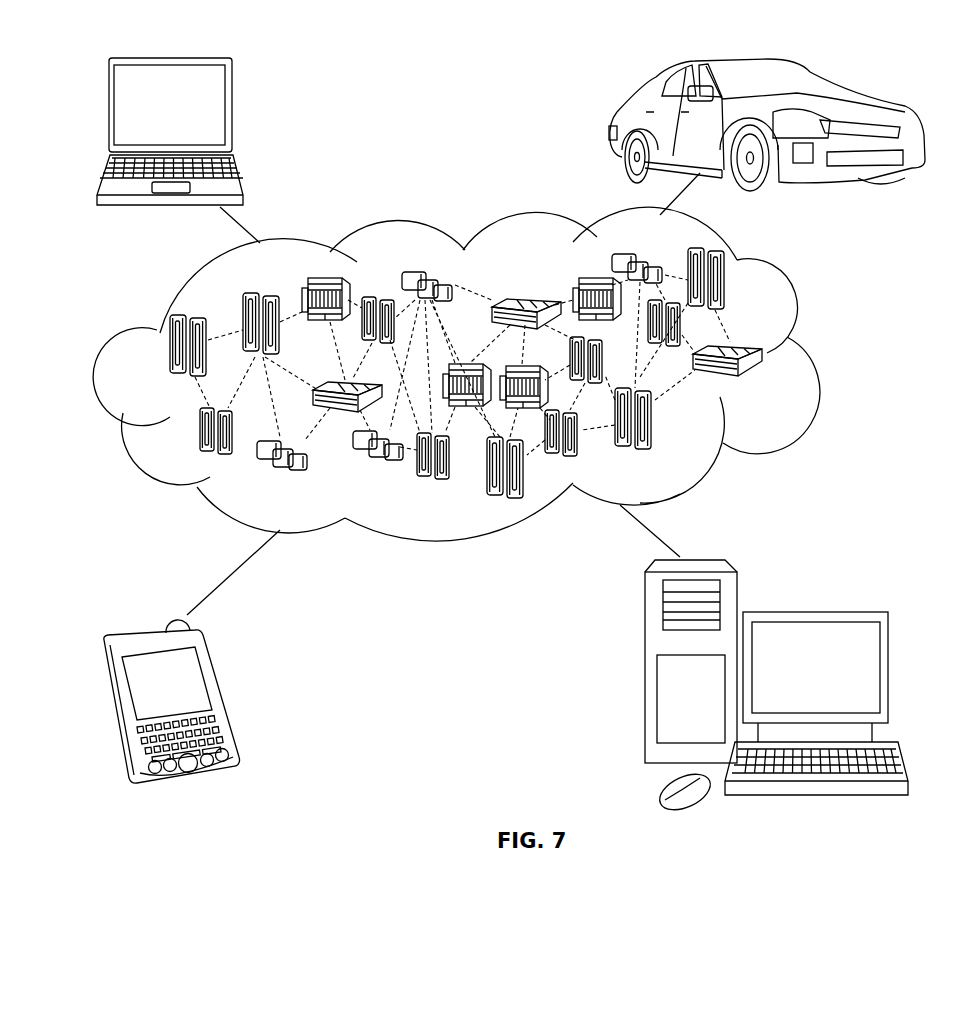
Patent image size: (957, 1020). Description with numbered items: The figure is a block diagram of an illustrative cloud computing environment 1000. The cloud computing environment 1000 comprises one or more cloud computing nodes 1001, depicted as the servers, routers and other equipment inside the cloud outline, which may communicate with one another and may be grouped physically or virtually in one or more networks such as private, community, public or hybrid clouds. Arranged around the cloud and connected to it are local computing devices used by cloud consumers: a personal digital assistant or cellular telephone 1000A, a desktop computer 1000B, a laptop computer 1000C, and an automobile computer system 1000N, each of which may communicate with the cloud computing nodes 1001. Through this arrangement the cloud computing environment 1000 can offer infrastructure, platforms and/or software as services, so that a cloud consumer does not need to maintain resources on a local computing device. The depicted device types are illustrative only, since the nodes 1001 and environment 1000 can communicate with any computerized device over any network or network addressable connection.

The cloud computing environment 1000 is at (815, 353).
The cloud computing nodes 1001 is at (770, 383).
The personal digital assistant (PDA) or cellular telephone 1000A is at (223, 697).
The desktop computer 1000B is at (812, 612).
The laptop computer 1000C is at (232, 112).
The automobile computer system 1000N is at (618, 129).